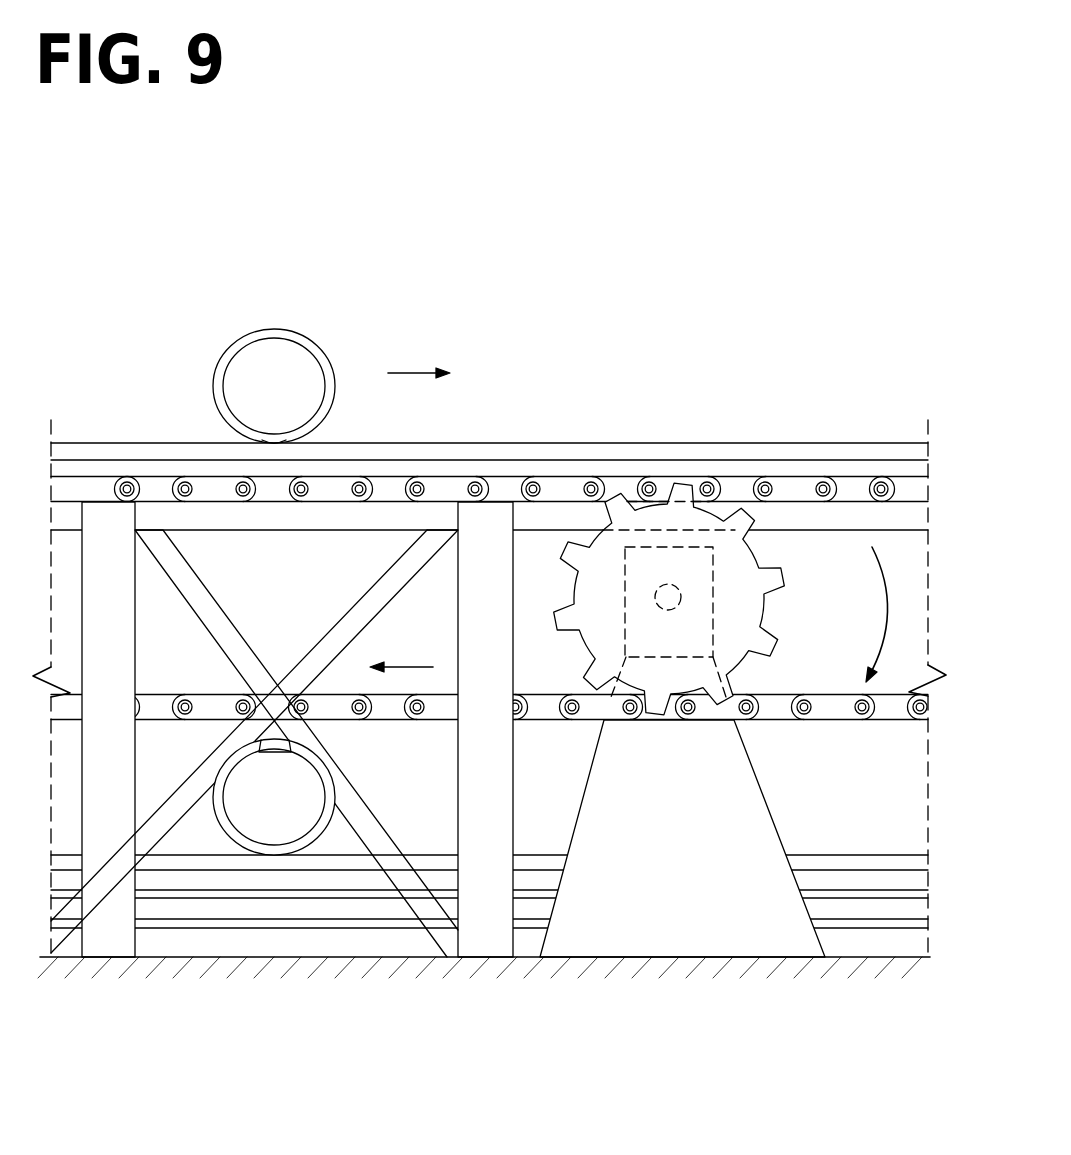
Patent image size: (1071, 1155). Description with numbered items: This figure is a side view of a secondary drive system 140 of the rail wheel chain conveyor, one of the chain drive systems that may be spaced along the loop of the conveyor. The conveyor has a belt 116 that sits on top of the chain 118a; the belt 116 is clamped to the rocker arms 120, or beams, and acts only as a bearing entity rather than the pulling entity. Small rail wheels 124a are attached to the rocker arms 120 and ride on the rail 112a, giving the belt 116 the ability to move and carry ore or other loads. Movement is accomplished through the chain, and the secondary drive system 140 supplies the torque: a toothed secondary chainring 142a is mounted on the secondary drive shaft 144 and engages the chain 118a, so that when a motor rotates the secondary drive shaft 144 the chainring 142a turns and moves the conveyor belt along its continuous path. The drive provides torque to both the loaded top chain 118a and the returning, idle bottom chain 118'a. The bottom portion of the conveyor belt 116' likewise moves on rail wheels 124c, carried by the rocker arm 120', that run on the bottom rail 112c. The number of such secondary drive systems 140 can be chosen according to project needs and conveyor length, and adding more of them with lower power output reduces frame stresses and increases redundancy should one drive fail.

The rail 112a is at (473, 443).
The rail 112c is at (205, 855).
The belt 116 is at (669, 538).
The bottom portion of the conveyor belt 116' is at (743, 785).
The chain 118a is at (735, 477).
The bottom chain 118'a is at (489, 743).
The rocker arm 120 is at (214, 407).
The rocker arm 120' is at (346, 762).
The rail wheel 124a is at (307, 340).
The rail wheel 124c is at (323, 843).
The secondary drive system 140 is at (793, 294).
The secondary chainring 142a is at (765, 632).
The secondary drive shaft 144 is at (679, 592).